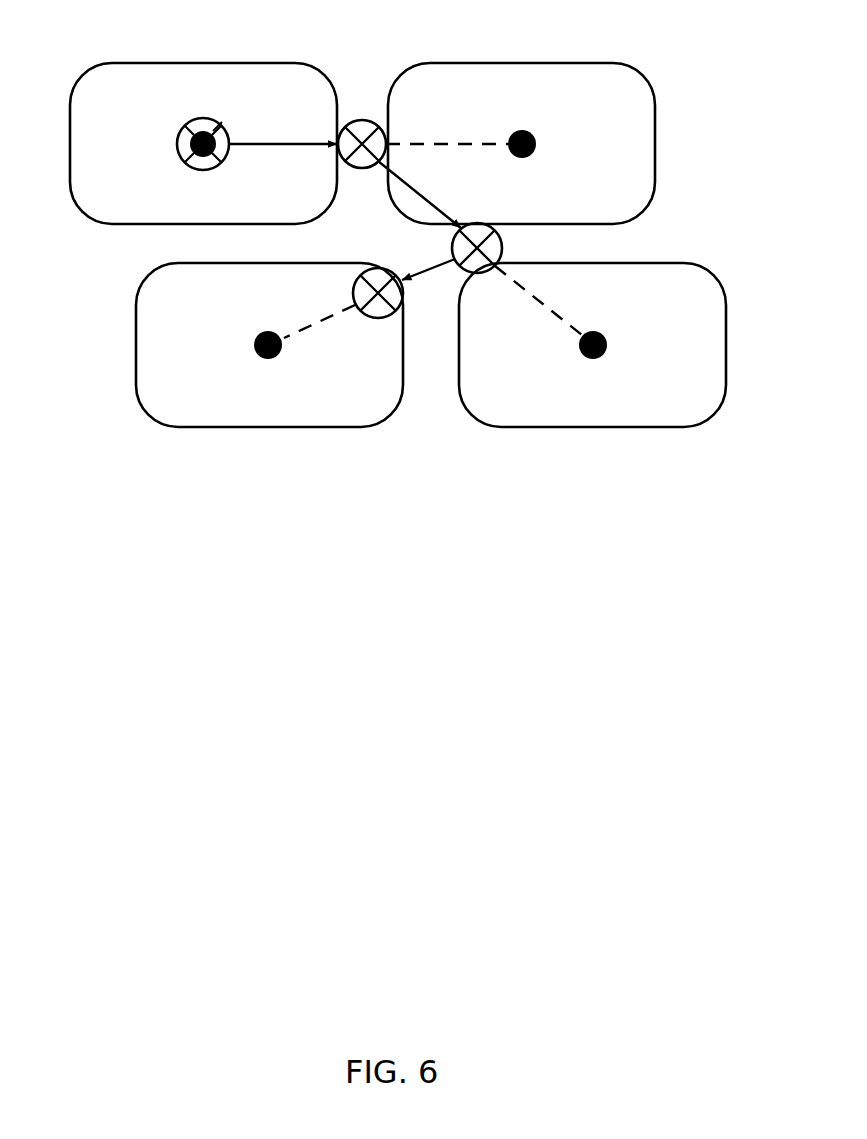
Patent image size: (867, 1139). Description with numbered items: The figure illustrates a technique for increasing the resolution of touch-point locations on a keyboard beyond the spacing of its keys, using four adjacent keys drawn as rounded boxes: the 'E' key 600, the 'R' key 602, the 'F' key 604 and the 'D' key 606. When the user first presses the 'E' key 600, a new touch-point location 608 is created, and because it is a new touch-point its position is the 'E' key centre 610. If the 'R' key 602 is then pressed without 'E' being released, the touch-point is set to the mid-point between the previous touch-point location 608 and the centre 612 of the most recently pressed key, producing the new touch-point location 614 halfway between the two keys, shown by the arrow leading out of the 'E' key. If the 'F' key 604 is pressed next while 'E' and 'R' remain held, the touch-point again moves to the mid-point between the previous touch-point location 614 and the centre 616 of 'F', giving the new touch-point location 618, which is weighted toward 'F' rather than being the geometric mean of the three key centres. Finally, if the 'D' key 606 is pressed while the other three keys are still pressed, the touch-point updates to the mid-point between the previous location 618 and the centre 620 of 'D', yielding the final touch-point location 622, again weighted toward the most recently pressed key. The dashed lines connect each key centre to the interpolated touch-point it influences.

The 'E' key 600 is at (98, 63).
The 'R' key 602 is at (633, 63).
The 'F' key 604 is at (716, 412).
The 'D' key 606 is at (160, 426).
The touch-point location 608 is at (203, 172).
The 'E' key centre 610 is at (205, 120).
The centre of 'R' key 612 is at (535, 139).
The touch-point location 614 is at (360, 118).
The centre of 'F' key 616 is at (607, 350).
The touch-point location 618 is at (503, 245).
The centre of 'D' key 620 is at (256, 355).
The touch-point location 622 is at (378, 318).